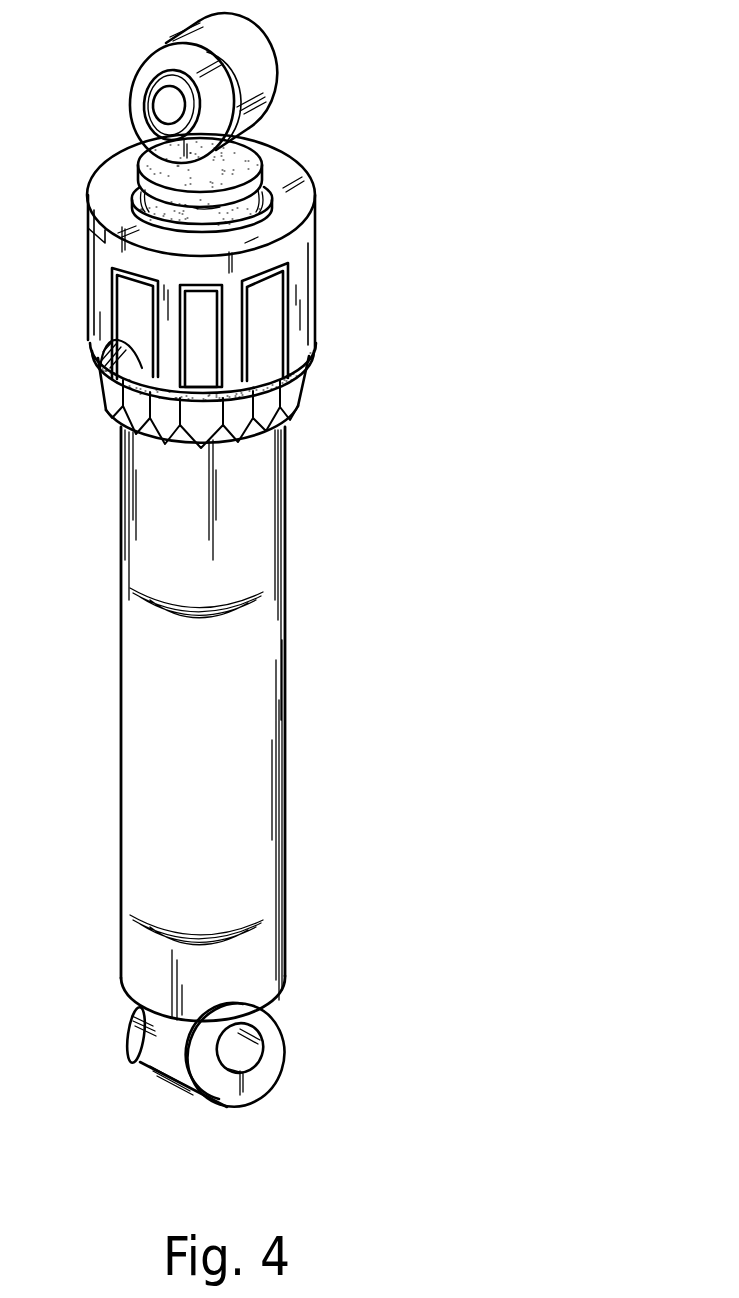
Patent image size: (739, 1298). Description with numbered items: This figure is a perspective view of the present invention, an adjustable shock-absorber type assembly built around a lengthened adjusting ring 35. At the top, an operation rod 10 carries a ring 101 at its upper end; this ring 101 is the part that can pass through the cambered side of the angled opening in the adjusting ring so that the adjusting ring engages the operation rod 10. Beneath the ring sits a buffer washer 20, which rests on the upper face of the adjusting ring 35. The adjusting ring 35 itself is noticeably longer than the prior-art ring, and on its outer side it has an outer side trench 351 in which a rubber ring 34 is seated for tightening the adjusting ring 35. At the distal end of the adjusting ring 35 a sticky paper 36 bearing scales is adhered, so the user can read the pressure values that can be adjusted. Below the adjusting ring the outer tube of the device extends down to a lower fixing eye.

The operation rod 10 is at (262, 49).
The ring 101 is at (137, 68).
The buffer washer 20 is at (264, 157).
The adjusting ring 35 is at (296, 237).
The outer side trench 351 is at (100, 375).
The rubber ring 34 is at (311, 352).
The sticky paper 36 is at (300, 407).